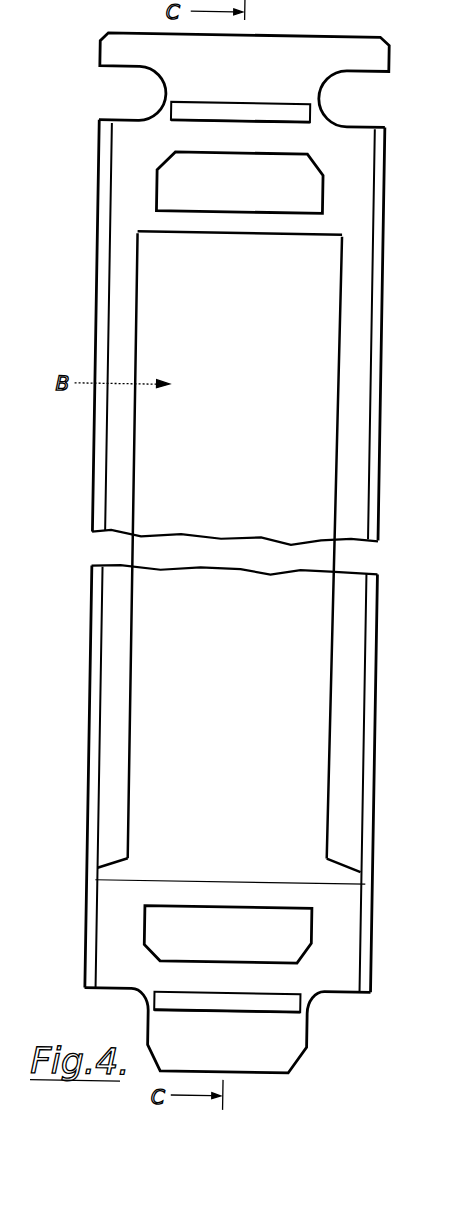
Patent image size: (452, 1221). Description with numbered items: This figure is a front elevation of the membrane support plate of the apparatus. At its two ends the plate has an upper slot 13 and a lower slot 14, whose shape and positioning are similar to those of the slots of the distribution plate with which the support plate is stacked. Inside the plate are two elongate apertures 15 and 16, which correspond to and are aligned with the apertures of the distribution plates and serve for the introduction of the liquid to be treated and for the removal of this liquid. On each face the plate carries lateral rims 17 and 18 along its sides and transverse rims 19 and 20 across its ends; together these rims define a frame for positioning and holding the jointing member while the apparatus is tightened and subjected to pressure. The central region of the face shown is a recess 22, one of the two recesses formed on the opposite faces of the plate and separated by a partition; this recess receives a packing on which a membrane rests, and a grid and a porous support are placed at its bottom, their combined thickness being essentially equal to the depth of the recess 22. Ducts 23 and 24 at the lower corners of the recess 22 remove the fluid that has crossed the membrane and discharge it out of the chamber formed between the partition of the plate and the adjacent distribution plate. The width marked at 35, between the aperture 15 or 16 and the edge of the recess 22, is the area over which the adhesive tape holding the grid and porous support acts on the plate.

The upper slot 13 is at (129, 69).
The lower slot 14 is at (134, 992).
The elongate aperture 15 is at (165, 182).
The elongate aperture 16 is at (170, 929).
The lateral rim 17 is at (95, 283).
The lateral rim 18 is at (375, 283).
The transverse rim 19 is at (240, 110).
The transverse rim 20 is at (235, 1002).
The recess 22 is at (158, 612).
The duct 23 is at (114, 874).
The duct 24 is at (360, 875).
The width 35 is at (236, 222).